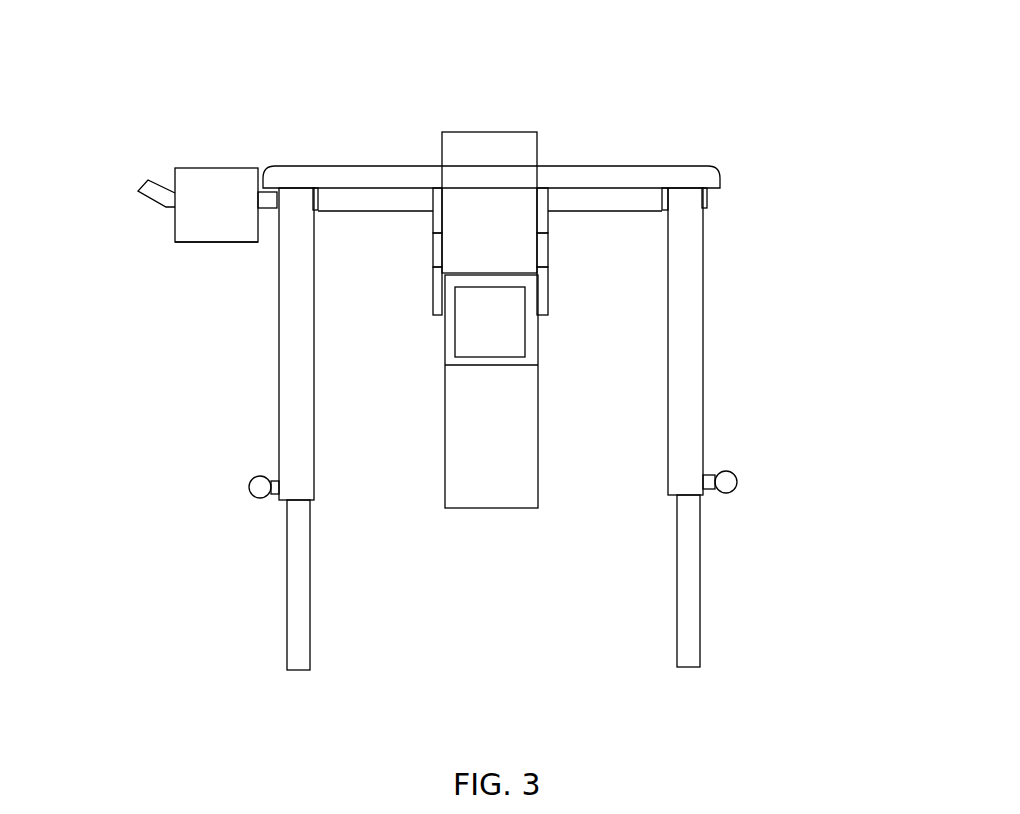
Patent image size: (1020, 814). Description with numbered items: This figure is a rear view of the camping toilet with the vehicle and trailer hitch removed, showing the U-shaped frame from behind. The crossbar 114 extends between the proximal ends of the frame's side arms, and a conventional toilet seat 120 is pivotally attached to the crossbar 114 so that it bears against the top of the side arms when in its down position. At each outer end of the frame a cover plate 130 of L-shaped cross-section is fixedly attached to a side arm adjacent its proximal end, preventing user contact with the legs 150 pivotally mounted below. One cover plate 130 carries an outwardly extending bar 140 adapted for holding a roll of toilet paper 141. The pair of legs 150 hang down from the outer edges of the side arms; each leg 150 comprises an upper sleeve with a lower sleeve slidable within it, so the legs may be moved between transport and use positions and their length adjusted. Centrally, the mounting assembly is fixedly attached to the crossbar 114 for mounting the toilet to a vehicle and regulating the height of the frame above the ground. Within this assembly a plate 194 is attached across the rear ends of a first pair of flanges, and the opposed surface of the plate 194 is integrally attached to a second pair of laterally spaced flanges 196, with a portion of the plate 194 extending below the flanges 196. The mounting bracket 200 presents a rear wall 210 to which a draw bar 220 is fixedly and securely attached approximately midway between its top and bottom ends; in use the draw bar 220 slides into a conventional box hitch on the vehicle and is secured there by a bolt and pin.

The crossbar 114 is at (358, 210).
The toilet seat 120 is at (687, 165).
The cover plate 130 is at (707, 206).
The outwardly extending bar 140 is at (152, 198).
The roll of toilet paper 141 is at (177, 242).
The leg 150 is at (232, 447).
The plate 194 is at (545, 296).
The second pair of flanges 196 is at (545, 245).
The mounting bracket 200 is at (549, 335).
The rear wall 210 is at (513, 133).
The draw bar 220 is at (537, 360).